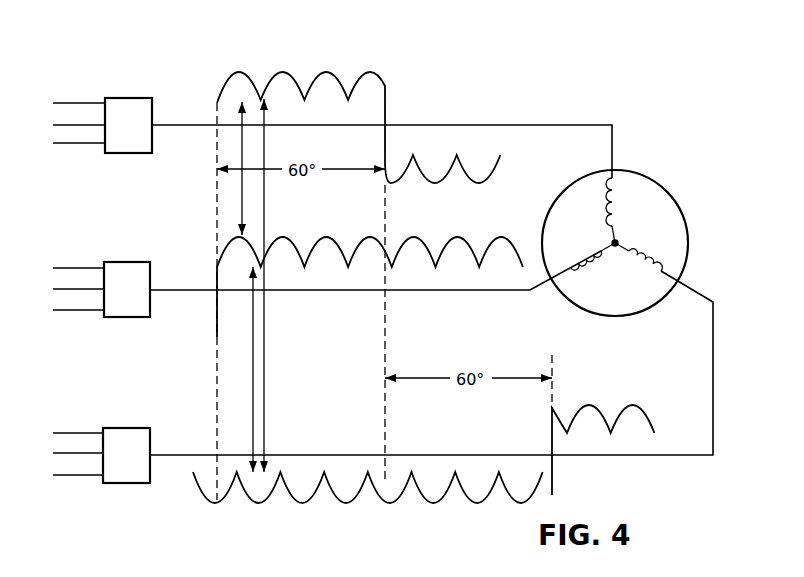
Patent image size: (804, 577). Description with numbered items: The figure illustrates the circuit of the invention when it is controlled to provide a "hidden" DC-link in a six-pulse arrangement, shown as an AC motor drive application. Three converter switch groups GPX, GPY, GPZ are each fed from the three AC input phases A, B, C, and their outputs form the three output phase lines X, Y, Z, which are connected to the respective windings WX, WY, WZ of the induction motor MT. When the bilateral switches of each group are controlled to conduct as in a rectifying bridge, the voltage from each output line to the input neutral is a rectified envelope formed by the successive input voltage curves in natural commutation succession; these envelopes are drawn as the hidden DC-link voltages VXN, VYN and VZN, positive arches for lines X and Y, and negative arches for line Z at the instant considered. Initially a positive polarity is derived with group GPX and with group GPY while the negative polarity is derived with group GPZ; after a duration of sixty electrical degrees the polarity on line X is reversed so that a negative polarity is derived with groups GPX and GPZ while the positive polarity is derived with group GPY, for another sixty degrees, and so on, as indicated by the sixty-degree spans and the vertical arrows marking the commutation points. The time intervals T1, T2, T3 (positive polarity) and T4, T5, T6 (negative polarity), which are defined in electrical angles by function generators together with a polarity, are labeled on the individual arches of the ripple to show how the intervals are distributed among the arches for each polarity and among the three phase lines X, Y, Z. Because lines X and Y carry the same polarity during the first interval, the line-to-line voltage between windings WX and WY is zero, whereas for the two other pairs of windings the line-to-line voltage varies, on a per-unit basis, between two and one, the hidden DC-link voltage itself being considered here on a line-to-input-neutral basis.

The input phase A is at (74, 256).
The input phase B is at (72, 290).
The input phase C is at (74, 323).
The group GPX is at (128, 125).
The group GPY is at (127, 289).
The group GPZ is at (126, 455).
The phase line X is at (548, 125).
The phase line Y is at (505, 290).
The phase line Z is at (590, 455).
The induction motor MT is at (716, 193).
The winding WX is at (617, 196).
The winding WY is at (574, 258).
The winding WZ is at (643, 268).
The hidden DC-link voltage VXN is at (342, 82).
The hidden DC-link voltage VYN is at (478, 262).
The hidden DC-link voltage VZN is at (456, 485).
The time interval T1 is at (435, 259).
The time interval T2 is at (552, 426).
The time interval T3 is at (457, 259).
The time interval T4 is at (575, 491).
The time interval T5 is at (195, 345).
The time interval T6 is at (392, 180).